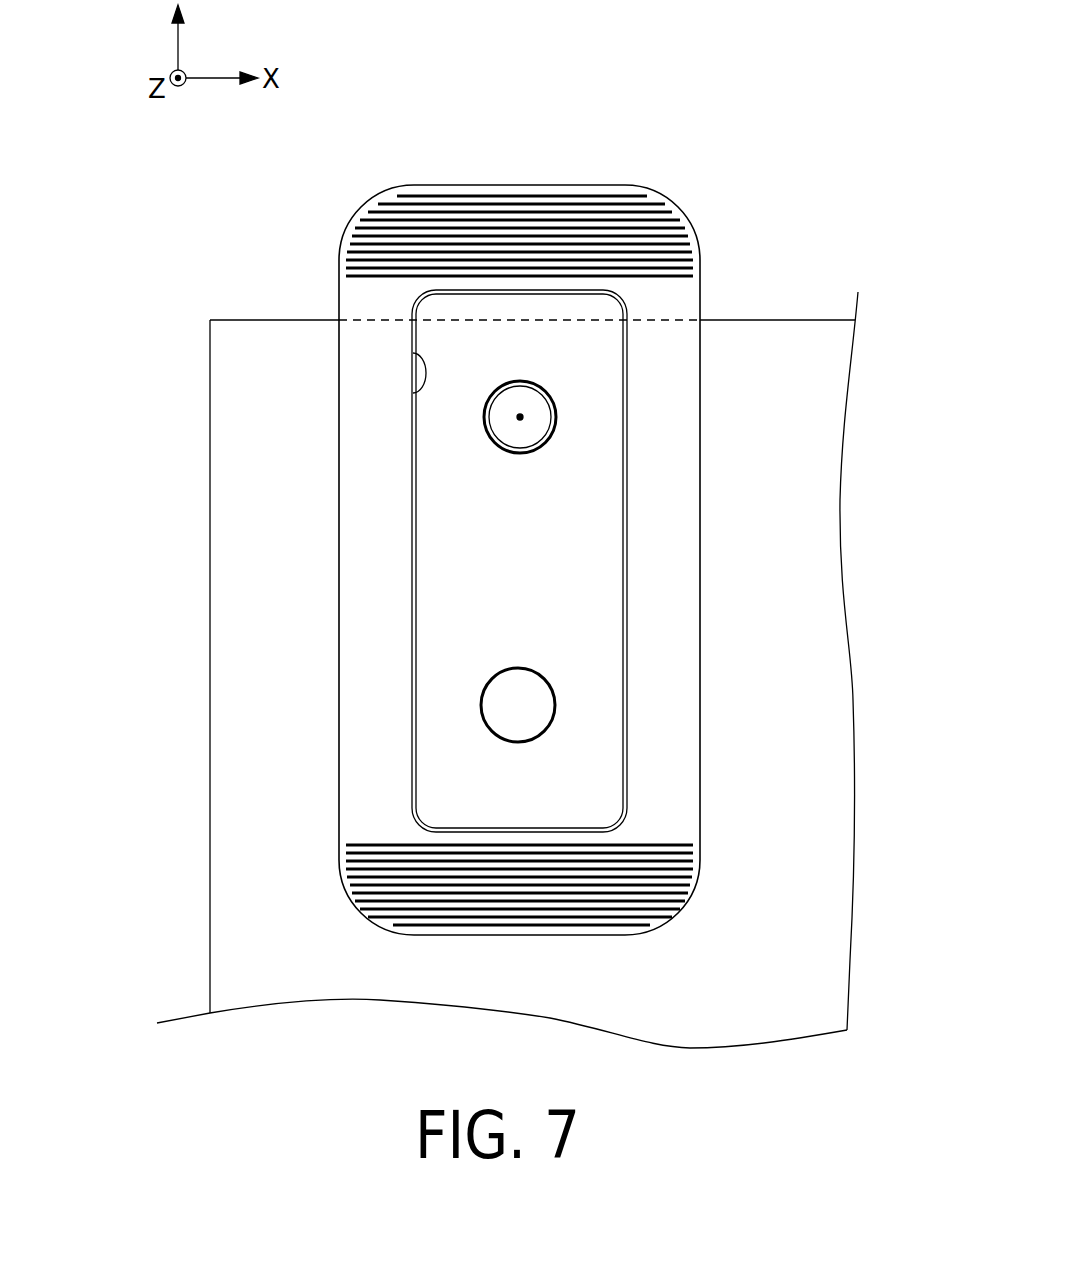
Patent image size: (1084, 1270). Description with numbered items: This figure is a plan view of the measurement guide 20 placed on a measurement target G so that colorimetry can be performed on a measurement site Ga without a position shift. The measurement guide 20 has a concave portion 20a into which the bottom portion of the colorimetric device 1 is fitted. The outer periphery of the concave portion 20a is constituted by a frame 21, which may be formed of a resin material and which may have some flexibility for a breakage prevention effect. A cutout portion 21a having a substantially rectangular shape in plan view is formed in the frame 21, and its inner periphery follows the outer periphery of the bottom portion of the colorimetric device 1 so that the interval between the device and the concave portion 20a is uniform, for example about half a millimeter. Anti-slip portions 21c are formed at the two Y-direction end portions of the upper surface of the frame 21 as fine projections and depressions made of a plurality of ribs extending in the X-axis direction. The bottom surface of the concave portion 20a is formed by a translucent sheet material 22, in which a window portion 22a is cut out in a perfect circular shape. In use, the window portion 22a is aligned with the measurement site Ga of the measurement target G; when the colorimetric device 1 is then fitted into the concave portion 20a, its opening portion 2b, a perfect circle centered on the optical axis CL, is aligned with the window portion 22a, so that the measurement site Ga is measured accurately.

The measurement guide 20 is at (656, 140).
The concave portion 20a is at (578, 620).
The frame 21 is at (410, 185).
The cutout portion 21a is at (412, 375).
The anti-slip portion 21c is at (670, 216).
The sheet material 22 is at (587, 553).
The window portion 22a is at (548, 398).
The colorimetric device 1 is at (412, 535).
The opening portion 2b is at (490, 447).
The measurement target G is at (240, 318).
The measurement site Ga is at (512, 418).
The optical axis CL is at (520, 417).